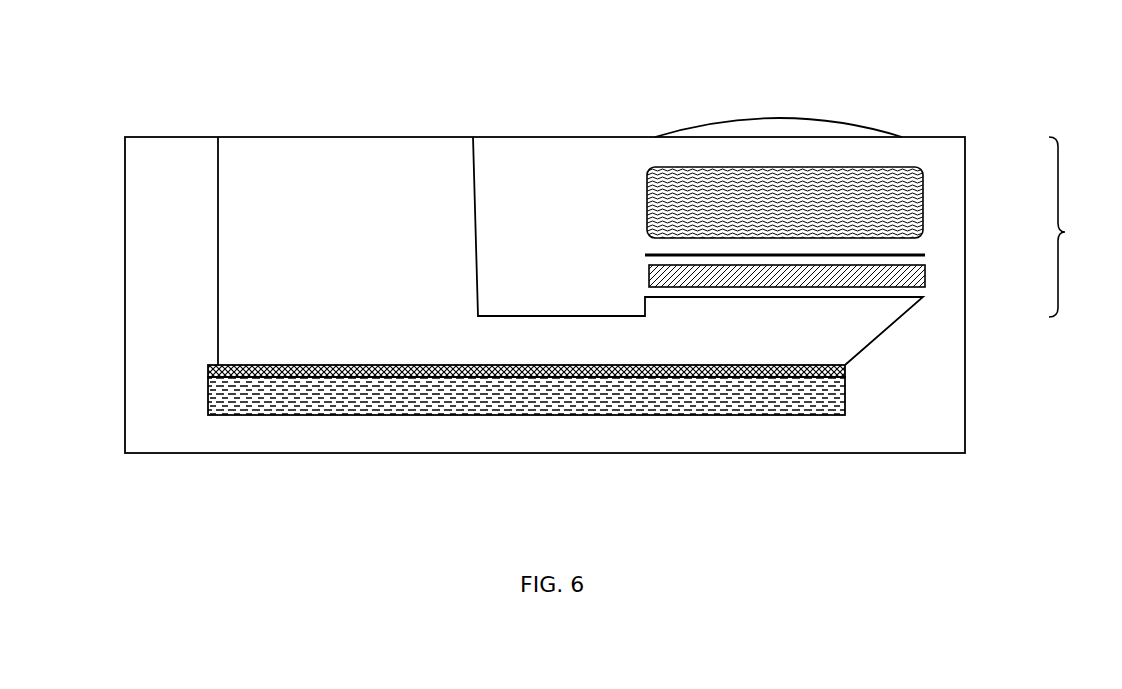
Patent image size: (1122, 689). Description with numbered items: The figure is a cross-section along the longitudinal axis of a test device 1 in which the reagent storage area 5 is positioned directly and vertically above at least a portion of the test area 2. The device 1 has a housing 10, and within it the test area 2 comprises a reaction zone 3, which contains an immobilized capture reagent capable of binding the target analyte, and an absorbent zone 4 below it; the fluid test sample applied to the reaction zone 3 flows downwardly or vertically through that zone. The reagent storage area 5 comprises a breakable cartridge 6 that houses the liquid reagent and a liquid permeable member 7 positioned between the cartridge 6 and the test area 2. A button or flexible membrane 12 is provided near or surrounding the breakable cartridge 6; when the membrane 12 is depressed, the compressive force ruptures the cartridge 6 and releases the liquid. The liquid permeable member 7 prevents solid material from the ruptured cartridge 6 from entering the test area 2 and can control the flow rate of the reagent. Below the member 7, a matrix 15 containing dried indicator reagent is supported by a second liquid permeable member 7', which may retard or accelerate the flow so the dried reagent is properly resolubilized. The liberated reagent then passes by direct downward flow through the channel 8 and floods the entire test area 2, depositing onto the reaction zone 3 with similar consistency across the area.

The test device 1 is at (109, 107).
The test area 2 is at (481, 328).
The reaction zone 3 is at (196, 363).
The absorbent zone 4 is at (196, 404).
The reagent storage area 5 is at (1072, 227).
The breakable cartridge 6 is at (918, 193).
The liquid permeable member 7 is at (837, 239).
The second liquid permeable member 7' is at (845, 333).
The channel 8 is at (819, 321).
The housing 10 is at (914, 427).
The button or flexible membrane 12 is at (860, 120).
The matrix 15 is at (929, 282).